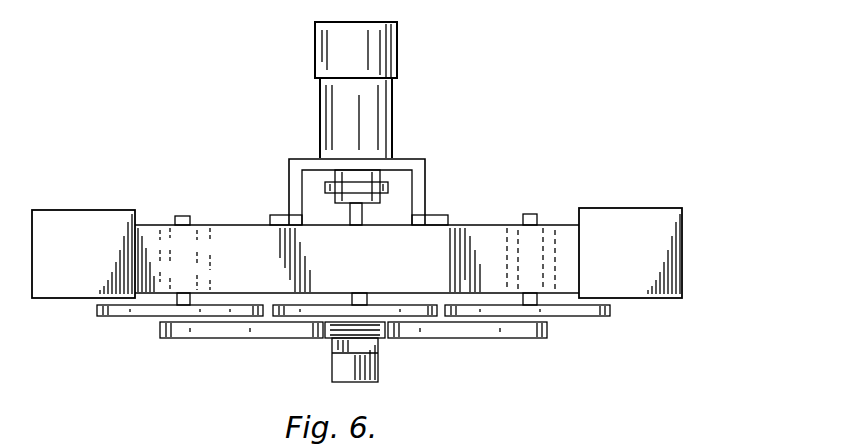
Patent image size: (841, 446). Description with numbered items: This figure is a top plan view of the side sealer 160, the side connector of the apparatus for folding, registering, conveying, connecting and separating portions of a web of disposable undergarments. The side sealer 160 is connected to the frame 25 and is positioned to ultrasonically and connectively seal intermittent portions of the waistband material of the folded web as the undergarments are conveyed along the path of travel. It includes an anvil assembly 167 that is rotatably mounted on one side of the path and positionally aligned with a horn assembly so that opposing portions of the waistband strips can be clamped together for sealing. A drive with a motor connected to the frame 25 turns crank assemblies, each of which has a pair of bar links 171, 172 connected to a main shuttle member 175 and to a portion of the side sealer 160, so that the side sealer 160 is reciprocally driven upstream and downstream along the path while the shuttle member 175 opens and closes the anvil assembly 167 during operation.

The side sealer 160 is at (578, 97).
The frame 25 is at (57, 288).
The bar link 171 is at (148, 316).
The bar link 172 is at (568, 316).
The main shuttle member 175 is at (292, 338).
The anvil assembly 167 is at (440, 372).